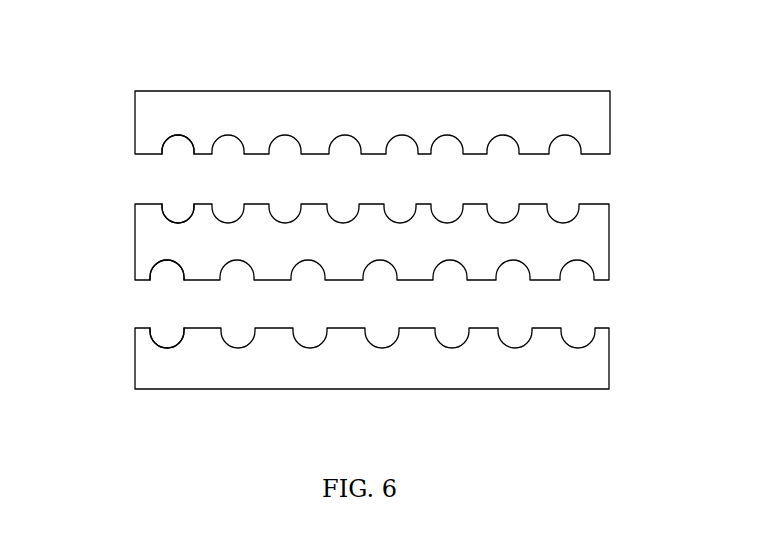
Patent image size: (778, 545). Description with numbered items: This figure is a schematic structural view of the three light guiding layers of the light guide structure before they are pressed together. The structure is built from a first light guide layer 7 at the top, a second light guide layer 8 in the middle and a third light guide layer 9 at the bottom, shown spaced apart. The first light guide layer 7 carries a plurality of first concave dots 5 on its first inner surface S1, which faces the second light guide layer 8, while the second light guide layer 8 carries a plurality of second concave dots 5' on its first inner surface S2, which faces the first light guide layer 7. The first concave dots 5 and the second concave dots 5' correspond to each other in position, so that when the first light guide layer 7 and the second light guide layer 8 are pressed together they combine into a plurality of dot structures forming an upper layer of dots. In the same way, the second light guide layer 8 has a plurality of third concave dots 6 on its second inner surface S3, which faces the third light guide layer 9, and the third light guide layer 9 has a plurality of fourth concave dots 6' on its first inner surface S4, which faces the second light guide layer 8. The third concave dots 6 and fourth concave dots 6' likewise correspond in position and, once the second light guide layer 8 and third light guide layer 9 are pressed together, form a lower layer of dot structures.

The first concave dots 5 is at (130, 121).
The second concave dots 5' is at (127, 199).
The third concave dots 6 is at (118, 247).
The fourth concave dots 6' is at (116, 321).
The first light guide layer 7 is at (540, 102).
The second light guide layer 8 is at (598, 246).
The third light guide layer 9 is at (585, 375).
The first inner surface of the first light guide layer S1 is at (570, 156).
The first inner surface of the second light guide layer S2 is at (571, 204).
The second inner surface of the second light guide layer S3 is at (579, 280).
The first inner surface of the third light guide layer S4 is at (578, 328).